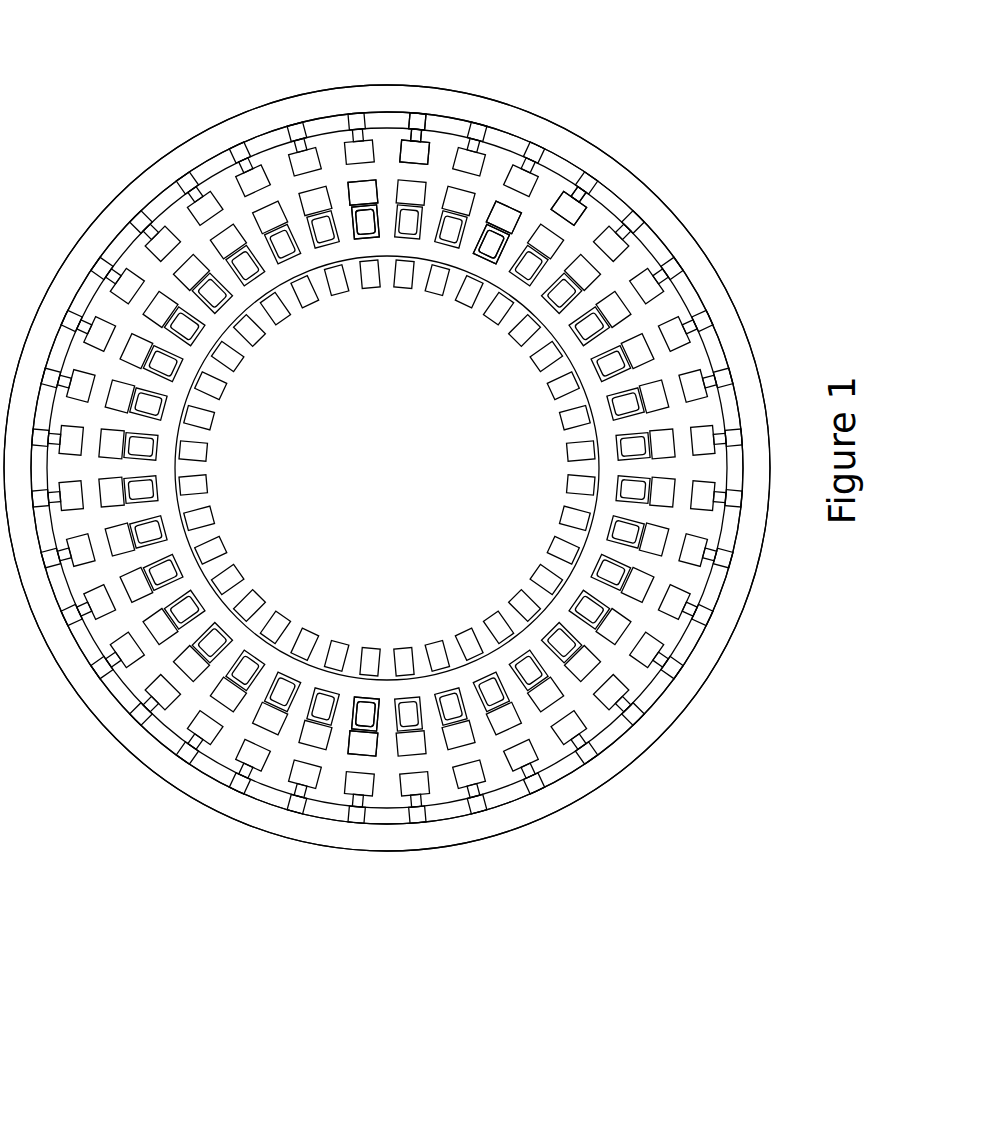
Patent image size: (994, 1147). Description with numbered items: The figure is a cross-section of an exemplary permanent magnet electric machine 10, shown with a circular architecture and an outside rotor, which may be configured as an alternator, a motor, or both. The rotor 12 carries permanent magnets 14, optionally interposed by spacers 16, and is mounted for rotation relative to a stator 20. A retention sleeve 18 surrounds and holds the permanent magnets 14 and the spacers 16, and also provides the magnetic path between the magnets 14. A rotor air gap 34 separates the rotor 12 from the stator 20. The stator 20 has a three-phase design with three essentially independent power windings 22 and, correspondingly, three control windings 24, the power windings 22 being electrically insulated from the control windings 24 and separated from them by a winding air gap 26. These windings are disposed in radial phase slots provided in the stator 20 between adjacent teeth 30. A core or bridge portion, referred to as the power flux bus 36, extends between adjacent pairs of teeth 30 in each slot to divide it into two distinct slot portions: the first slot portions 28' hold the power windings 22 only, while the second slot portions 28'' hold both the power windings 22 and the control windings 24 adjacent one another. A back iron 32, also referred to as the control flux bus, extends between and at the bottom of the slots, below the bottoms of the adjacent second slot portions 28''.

The permanent magnet electric machine 10 is at (614, 868).
The rotor 12 is at (253, 82).
The permanent magnets 14 is at (180, 187).
The spacers 16 is at (121, 240).
The retention sleeve 18 is at (56, 290).
The stator 20 is at (323, 168).
The power winding 22 is at (93, 612).
The control winding 24 is at (273, 627).
The winding air gap 26 is at (167, 643).
The first slot portion 28' is at (566, 124).
The second slot portion 28'' is at (323, 834).
The teeth 30 is at (488, 190).
The back iron 32 is at (384, 688).
The rotor air gap 34 is at (428, 130).
The power flux bus 36 is at (366, 172).